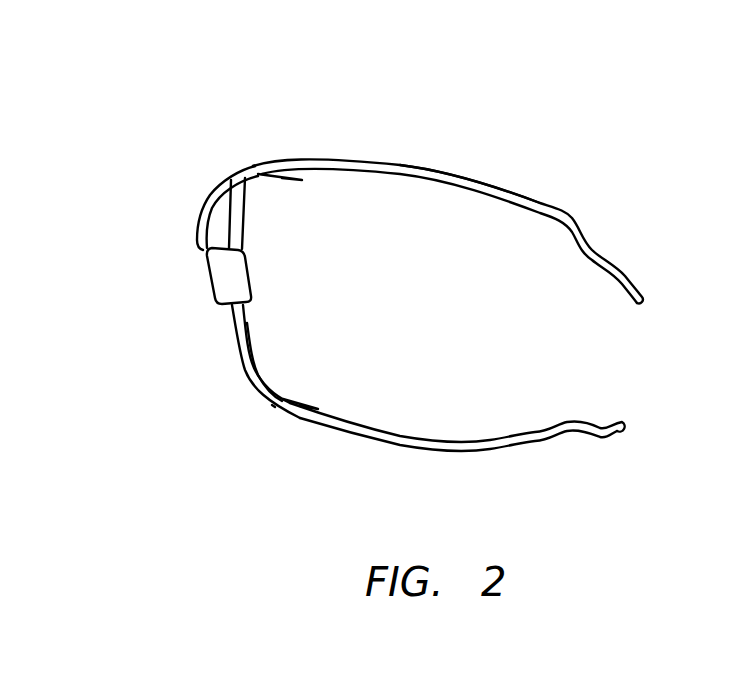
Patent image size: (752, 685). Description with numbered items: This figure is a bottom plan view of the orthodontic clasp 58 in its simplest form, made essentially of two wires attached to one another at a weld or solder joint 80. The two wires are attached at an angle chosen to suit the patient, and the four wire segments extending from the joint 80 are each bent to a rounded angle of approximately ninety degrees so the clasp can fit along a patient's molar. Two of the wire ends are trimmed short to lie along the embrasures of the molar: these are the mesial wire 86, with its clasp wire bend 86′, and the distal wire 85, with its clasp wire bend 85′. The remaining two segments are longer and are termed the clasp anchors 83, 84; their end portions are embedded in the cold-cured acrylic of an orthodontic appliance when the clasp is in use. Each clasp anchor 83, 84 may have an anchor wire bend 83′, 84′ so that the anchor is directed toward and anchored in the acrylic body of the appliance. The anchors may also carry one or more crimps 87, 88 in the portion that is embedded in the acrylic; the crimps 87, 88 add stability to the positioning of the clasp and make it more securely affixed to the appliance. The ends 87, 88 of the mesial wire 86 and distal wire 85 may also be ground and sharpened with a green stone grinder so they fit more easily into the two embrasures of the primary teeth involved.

The orthodontic clasp 58 is at (410, 138).
The joint 80 is at (225, 273).
The clasp anchor 83 is at (524, 192).
The anchor wire bend 83′ is at (262, 160).
The clasp anchor 84 is at (407, 445).
The anchor wire bend 84′ is at (270, 413).
The distal wire 85 is at (288, 397).
The clasp wire bend 85′ is at (242, 376).
The mesial wire 86 is at (278, 182).
The clasp wire bend 86′ is at (205, 188).
The crimp 87 is at (313, 407).
The crimp 88 is at (298, 180).